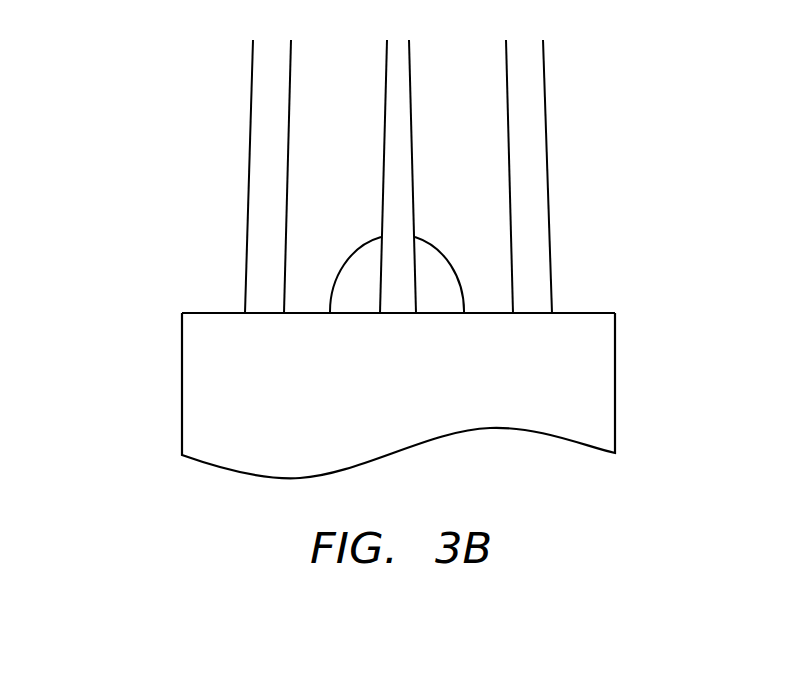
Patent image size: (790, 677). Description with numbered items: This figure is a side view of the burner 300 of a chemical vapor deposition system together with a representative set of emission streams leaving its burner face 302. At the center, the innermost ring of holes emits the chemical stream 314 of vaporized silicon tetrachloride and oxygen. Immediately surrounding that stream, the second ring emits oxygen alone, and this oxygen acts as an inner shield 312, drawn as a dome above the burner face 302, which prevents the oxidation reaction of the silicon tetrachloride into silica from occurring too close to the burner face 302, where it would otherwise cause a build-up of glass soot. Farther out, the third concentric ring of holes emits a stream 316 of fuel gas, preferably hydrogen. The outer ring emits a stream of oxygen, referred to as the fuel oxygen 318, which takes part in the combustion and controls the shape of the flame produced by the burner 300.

The burner 300 is at (182, 385).
The burner face 302 is at (587, 313).
The inner shield 312 is at (443, 248).
The chemical stream 314 is at (390, 157).
The stream of fuel gas 316 is at (288, 162).
The fuel oxygen 318 is at (248, 196).